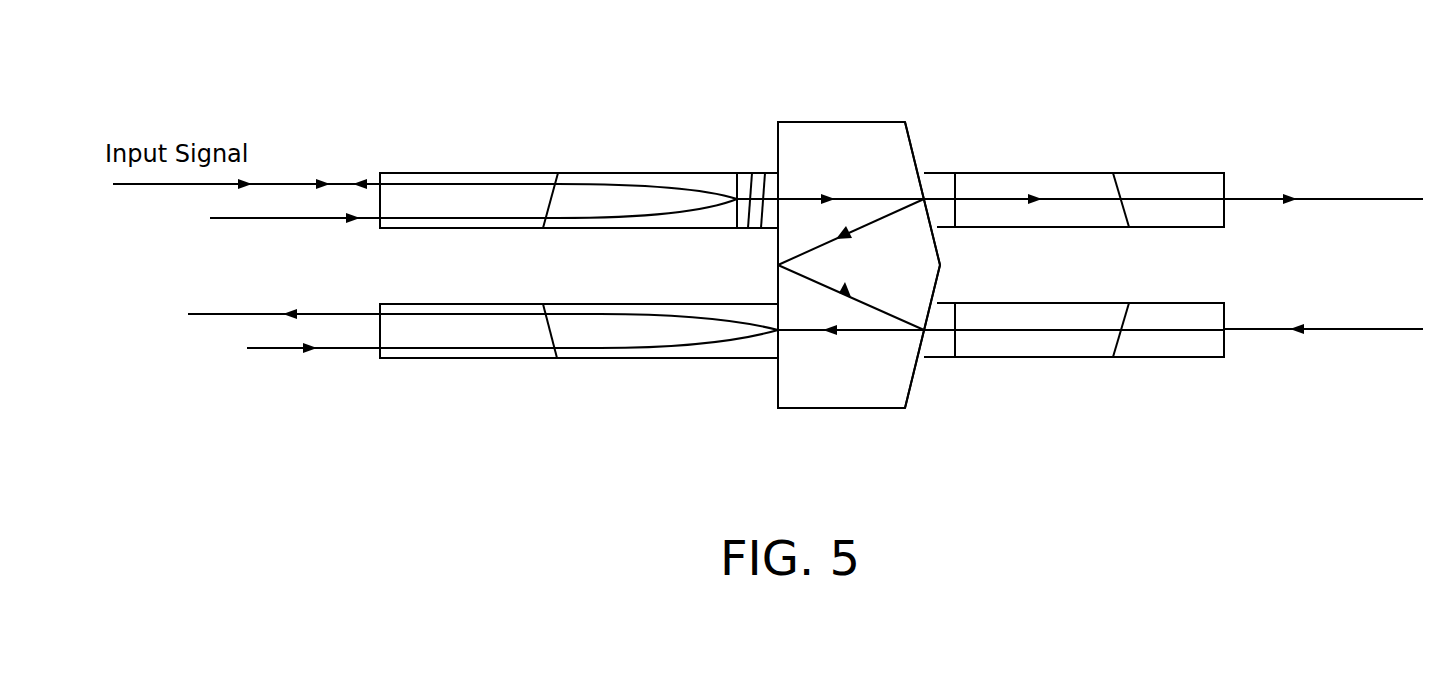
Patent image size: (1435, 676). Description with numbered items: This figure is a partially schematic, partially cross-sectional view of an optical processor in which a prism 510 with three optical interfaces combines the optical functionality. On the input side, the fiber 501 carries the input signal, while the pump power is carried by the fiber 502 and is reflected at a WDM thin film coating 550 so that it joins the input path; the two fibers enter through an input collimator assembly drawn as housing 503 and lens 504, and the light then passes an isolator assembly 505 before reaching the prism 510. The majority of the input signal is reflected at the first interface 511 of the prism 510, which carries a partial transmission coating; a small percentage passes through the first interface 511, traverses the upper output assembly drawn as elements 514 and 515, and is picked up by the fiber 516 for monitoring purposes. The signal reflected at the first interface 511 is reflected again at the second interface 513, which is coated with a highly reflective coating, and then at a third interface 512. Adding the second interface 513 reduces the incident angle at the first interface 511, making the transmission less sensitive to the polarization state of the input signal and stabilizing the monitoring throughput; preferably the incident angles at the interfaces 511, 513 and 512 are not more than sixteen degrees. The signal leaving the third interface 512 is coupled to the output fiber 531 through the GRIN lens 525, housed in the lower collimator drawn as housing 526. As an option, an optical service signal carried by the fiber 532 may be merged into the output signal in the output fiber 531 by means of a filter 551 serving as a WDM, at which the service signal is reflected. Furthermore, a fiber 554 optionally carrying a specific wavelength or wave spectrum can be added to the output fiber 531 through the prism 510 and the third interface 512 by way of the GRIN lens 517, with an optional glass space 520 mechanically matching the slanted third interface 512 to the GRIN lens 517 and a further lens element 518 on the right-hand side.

The fiber 501 is at (292, 180).
The fiber 502 is at (232, 222).
The first collimator housing 503 is at (468, 172).
The first collimating lens 504 is at (598, 172).
The WDM thin film coating 550 is at (733, 172).
The isolator assembly 505 is at (756, 172).
The prism 510 is at (845, 121).
The first interface 511 is at (912, 138).
The third interface 512 is at (910, 405).
The second interface 513 is at (777, 248).
The upper output coupling element 514 is at (945, 172).
The upper output collimator housing 515 is at (1036, 172).
The fiber 516 is at (1176, 172).
The glass space 520 is at (945, 302).
The GRIN lens 517 is at (1036, 302).
The lower lens 518 is at (1176, 302).
The fiber 554 is at (1365, 328).
The output fiber 531 is at (275, 312).
The fiber 532 is at (278, 352).
The lower collimator housing 526 is at (468, 360).
The GRIN lens 525 is at (598, 360).
The filter 551 is at (768, 360).